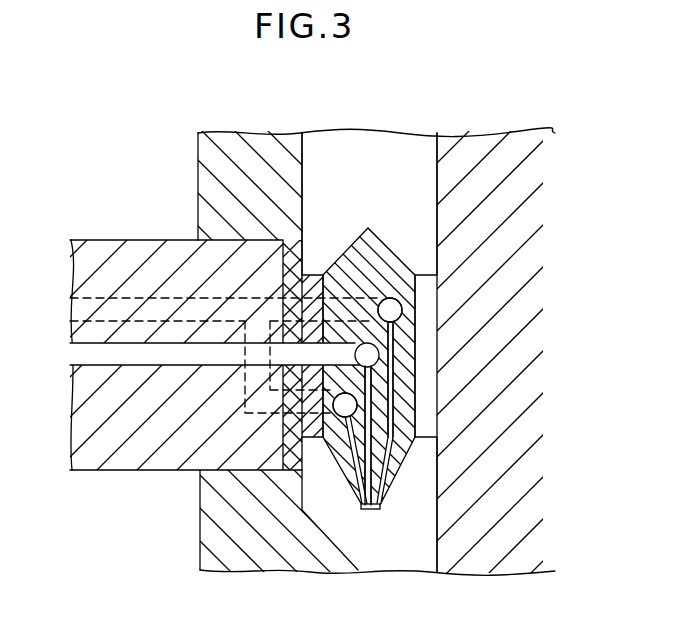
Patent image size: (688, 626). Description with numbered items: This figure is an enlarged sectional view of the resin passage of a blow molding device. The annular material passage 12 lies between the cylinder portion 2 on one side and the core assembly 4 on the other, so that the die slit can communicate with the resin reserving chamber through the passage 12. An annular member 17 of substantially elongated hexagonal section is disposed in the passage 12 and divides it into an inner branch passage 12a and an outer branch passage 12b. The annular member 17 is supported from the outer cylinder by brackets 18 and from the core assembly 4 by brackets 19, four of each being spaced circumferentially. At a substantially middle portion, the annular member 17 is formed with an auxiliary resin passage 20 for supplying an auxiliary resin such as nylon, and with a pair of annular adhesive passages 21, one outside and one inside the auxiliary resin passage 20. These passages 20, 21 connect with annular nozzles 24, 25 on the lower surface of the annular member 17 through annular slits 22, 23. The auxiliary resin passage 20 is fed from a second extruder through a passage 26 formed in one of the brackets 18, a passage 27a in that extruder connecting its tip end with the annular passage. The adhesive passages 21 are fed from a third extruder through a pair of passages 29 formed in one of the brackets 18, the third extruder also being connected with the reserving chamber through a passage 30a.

The cylinder portion 2 is at (205, 180).
The core assembly 4 is at (518, 162).
The annular material passage 12 is at (348, 191).
The inner branch passage 12a is at (422, 465).
The outer branch passage 12b is at (312, 525).
The annular member 17 is at (424, 312).
The brackets 18 is at (313, 272).
The brackets 19 is at (428, 280).
The auxiliary resin passage 20 is at (368, 343).
The annular adhesive passages 21 is at (396, 298).
The annular slit 22 is at (392, 420).
The annular slits 23 is at (366, 417).
The annular nozzle 24 is at (368, 510).
The annular nozzles 25 is at (322, 470).
The passage 26 is at (340, 322).
The passage 27a is at (130, 360).
The passages 29 is at (314, 275).
The passage 30a is at (118, 310).